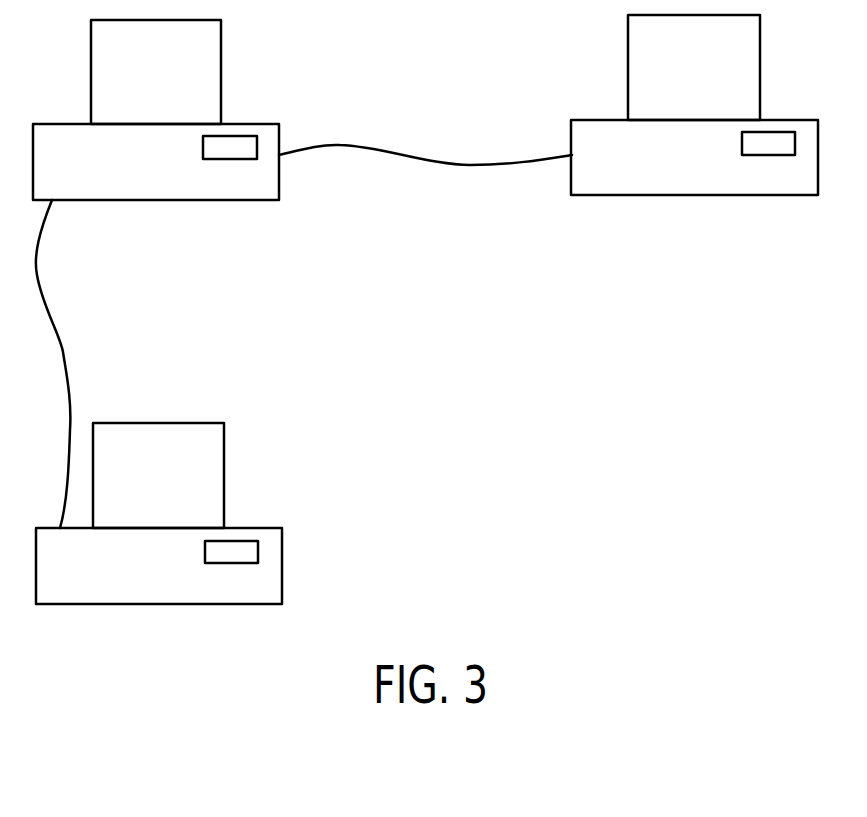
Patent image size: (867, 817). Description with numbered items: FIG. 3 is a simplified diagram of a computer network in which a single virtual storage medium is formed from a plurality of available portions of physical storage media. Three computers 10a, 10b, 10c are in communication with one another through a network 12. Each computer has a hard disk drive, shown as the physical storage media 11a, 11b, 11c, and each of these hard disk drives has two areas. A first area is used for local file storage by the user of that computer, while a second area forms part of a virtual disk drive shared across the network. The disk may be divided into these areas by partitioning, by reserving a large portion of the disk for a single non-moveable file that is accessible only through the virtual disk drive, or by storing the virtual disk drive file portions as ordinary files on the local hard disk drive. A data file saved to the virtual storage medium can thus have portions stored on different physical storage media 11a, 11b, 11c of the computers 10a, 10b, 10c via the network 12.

The computer 10a is at (253, 123).
The computer 10b is at (703, 195).
The computer 10c is at (172, 604).
The physical storage medium 11a is at (238, 160).
The physical storage medium 11b is at (773, 132).
The physical storage medium 11c is at (238, 541).
The network 12 is at (443, 165).